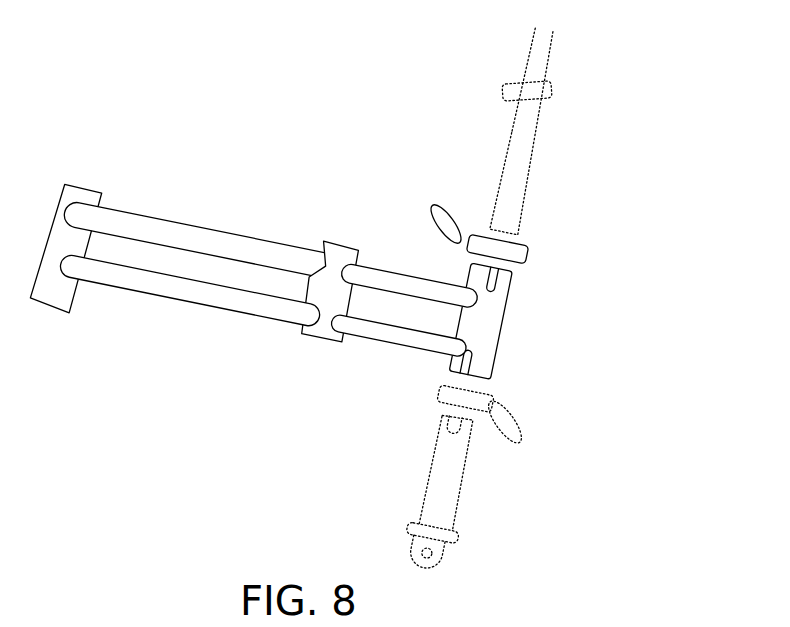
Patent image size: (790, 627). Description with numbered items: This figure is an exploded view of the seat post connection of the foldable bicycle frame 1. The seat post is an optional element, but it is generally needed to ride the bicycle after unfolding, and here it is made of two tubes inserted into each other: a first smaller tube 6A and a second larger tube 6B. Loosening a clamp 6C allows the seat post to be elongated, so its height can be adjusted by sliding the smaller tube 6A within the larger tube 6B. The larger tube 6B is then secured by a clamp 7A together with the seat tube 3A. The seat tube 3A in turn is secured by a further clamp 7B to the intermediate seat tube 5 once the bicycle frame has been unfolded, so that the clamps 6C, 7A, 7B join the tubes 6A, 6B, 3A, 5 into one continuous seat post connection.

The strap assembly 1 is at (227, 233).
The seat tube 3A is at (501, 328).
The intermediate seat tube 5 is at (455, 518).
The first smaller tube 6A is at (547, 72).
The second larger tube 6B is at (527, 202).
The clamp 6C is at (503, 87).
The clamp 7A is at (530, 257).
The clamp 7B is at (508, 414).